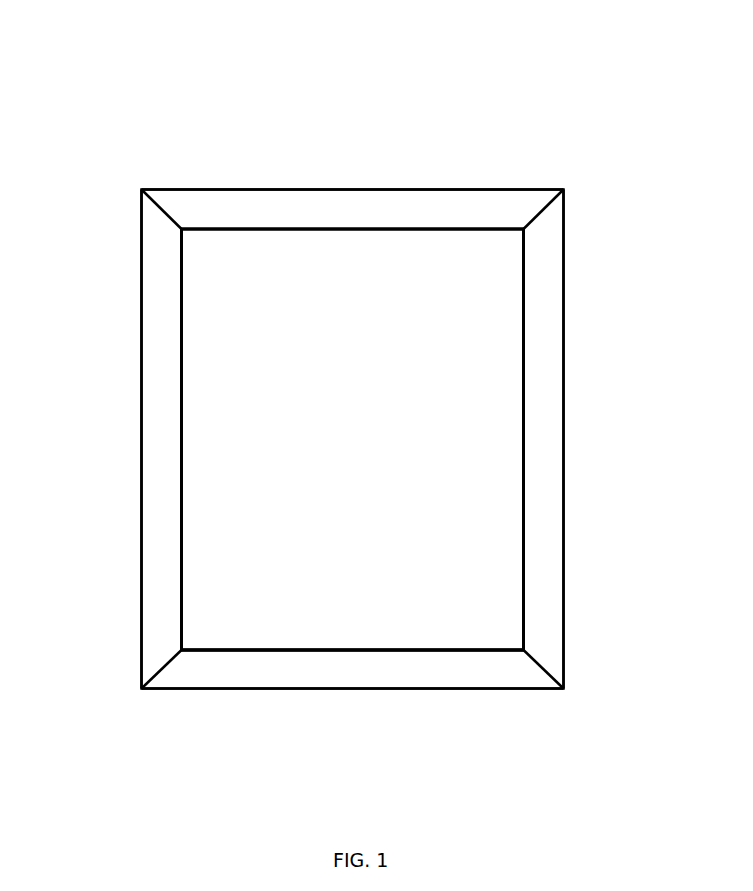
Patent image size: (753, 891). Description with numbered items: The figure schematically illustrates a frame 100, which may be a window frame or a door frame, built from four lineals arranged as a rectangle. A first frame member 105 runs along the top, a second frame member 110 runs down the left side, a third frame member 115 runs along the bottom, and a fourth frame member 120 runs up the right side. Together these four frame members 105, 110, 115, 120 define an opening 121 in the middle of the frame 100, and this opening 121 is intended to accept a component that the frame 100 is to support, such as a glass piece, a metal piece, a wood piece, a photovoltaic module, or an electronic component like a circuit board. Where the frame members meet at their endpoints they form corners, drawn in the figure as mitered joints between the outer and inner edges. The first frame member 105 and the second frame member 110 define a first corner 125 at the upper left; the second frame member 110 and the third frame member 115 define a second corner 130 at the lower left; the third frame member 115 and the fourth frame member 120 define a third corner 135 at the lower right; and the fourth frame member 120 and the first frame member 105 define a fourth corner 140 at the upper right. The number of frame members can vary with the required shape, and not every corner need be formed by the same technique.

The frame 100 is at (601, 87).
The first frame member 105 is at (357, 207).
The second frame member 110 is at (160, 440).
The third frame member 115 is at (375, 672).
The fourth frame member 120 is at (543, 437).
The opening 121 is at (339, 509).
The first corner 125 is at (192, 241).
The second corner 130 is at (192, 637).
The third corner 135 is at (511, 637).
The fourth corner 140 is at (513, 240).